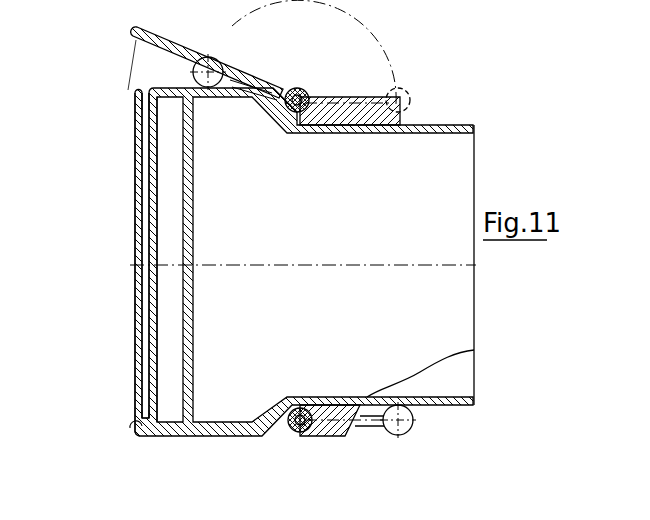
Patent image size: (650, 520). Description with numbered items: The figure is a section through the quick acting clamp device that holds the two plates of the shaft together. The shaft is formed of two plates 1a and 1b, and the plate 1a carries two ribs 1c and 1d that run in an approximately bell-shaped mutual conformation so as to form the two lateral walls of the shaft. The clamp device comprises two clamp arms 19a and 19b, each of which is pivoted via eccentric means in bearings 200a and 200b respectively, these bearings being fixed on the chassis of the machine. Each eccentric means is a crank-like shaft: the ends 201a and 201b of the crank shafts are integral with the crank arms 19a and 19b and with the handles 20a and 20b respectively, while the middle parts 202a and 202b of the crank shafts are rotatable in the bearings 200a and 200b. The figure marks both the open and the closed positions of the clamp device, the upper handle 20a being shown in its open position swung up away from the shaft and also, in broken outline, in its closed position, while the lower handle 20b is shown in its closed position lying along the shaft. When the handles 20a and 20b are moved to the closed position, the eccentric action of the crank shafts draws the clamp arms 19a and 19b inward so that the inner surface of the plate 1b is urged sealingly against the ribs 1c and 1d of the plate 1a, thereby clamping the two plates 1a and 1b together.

The plate 1a is at (152, 248).
The plate 1b is at (138, 192).
The rib 1c is at (143, 110).
The rib 1d is at (148, 418).
The clamp arm 19a is at (208, 78).
The clamp arm 19b is at (150, 432).
The handle 20a is at (203, 74).
The handle 20b is at (407, 430).
The bearing 200a is at (323, 90).
The bearing 200b is at (338, 412).
The crank shaft end 201a is at (299, 90).
The crank shaft end 201b is at (318, 438).
The crank shaft middle part 202a is at (323, 73).
The crank shaft middle part 202b is at (292, 430).